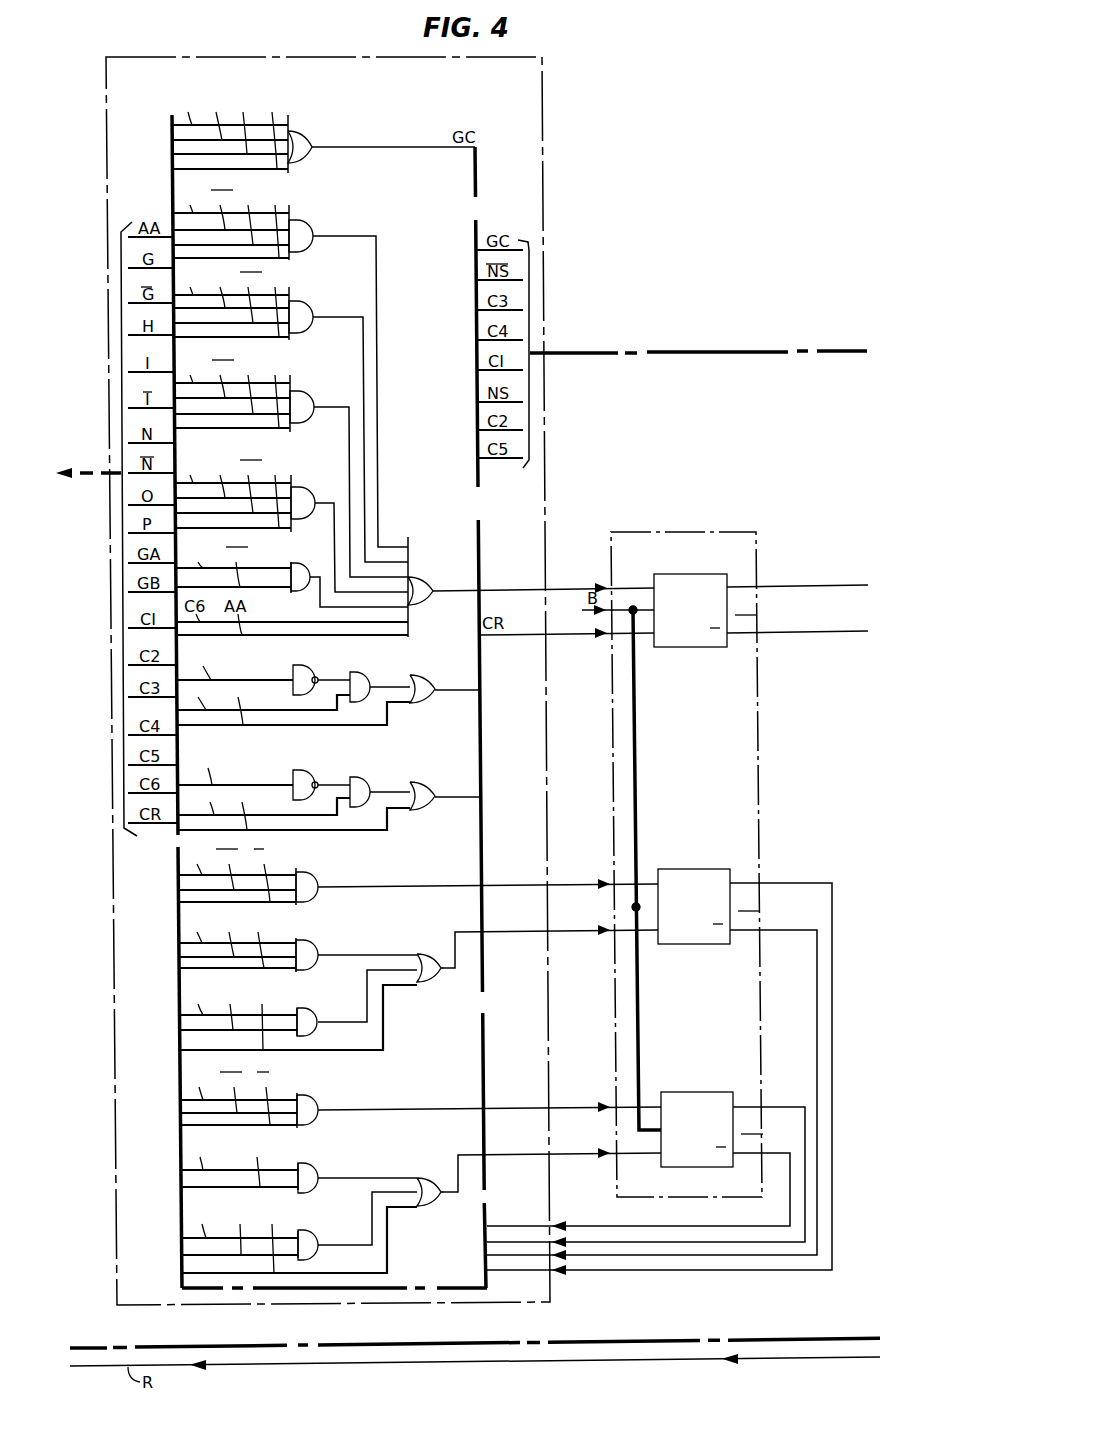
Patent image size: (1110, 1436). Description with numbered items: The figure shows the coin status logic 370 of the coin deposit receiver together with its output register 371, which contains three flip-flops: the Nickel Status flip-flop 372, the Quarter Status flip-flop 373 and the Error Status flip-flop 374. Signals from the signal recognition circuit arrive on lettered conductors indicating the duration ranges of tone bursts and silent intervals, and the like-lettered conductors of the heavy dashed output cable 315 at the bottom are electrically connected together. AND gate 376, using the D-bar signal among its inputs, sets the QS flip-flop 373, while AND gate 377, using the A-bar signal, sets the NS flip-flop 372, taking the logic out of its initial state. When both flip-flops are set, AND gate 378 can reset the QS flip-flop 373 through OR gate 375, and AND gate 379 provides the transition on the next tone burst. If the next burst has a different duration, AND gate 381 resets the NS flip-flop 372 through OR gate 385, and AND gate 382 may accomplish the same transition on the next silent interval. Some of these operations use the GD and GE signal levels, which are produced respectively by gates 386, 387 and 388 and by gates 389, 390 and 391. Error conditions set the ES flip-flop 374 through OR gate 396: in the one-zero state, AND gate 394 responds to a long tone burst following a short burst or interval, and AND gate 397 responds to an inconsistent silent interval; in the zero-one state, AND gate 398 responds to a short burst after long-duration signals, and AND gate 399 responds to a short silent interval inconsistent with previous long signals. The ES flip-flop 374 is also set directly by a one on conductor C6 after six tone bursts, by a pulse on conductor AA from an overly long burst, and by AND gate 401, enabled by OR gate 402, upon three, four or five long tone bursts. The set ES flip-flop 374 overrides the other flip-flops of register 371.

The output cable 315 is at (166, 1342).
The coin status logic 370 is at (542, 110).
The output register 371 is at (611, 697).
The Nickel Status flip-flop 372 is at (700, 1167).
The Quarter Status flip-flop 373 is at (695, 945).
The Error Status flip-flop 374 is at (692, 648).
The OR gate 375 is at (421, 954).
The AND gate 376 is at (305, 872).
The AND gate 377 is at (306, 1095).
The AND gate 378 is at (306, 1008).
The AND gate 379 is at (305, 940).
The AND gate 381 is at (306, 1163).
The AND gate 382 is at (306, 1230).
The OR gate 385 is at (421, 1178).
The OR gate 386 is at (424, 664).
The AND gate 387 is at (356, 672).
The inverter gate 388 is at (298, 665).
The OR gate 389 is at (420, 782).
The AND gate 390 is at (356, 777).
The inverter gate 391 is at (300, 770).
The AND gate 394 is at (299, 301).
The OR gate 396 is at (436, 563).
The AND gate 397 is at (301, 487).
The AND gate 398 is at (299, 220).
The AND gate 399 is at (300, 391).
The AND gate 401 is at (300, 563).
The OR gate 402 is at (300, 131).